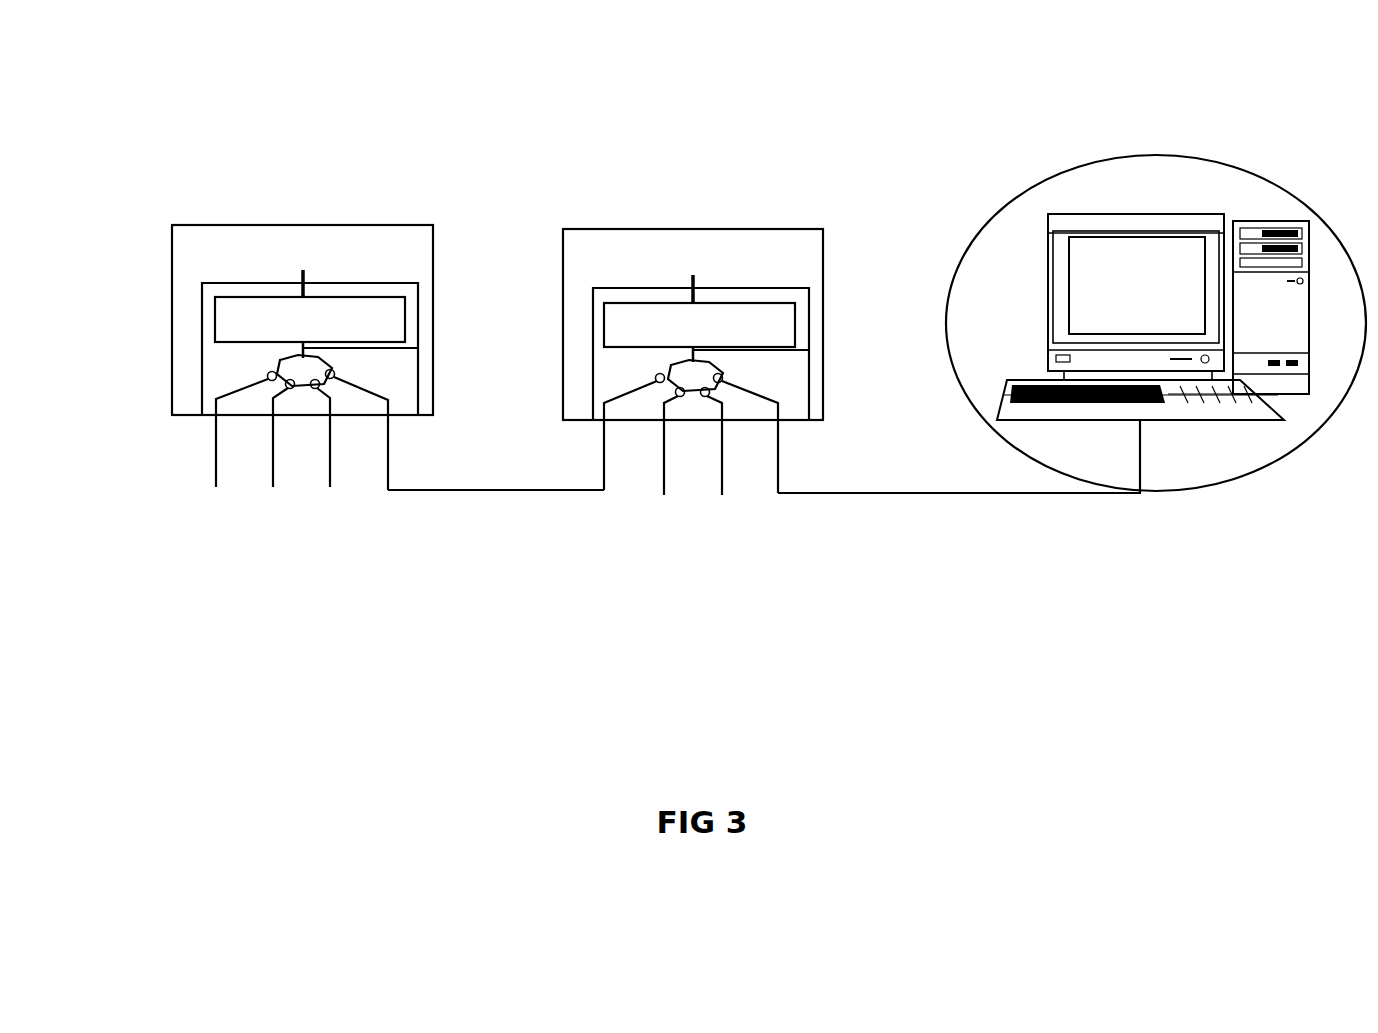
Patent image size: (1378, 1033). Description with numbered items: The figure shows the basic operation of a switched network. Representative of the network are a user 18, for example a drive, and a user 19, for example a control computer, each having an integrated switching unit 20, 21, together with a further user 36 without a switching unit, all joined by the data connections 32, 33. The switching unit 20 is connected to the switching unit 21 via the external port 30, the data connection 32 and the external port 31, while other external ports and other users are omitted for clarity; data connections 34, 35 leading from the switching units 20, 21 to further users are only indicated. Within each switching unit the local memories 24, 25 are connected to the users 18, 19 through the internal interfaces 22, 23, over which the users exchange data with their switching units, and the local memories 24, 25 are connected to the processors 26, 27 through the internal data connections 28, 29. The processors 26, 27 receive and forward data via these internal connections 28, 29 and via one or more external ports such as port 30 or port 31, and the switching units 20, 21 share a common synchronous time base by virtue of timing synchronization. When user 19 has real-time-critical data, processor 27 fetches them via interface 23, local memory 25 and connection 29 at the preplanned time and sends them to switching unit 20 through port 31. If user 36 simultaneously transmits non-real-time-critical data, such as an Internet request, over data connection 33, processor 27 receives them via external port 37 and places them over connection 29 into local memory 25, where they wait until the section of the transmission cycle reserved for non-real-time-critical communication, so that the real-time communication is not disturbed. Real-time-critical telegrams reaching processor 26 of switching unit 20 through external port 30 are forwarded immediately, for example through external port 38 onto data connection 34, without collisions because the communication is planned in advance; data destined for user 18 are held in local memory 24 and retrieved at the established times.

The user 18 is at (305, 247).
The user 19 is at (617, 262).
The switching unit 20 is at (220, 352).
The switching unit 21 is at (803, 348).
The internal interface 22 is at (300, 277).
The internal interface 23 is at (700, 278).
The local memory 24 is at (295, 368).
The local memory 25 is at (768, 320).
The processor 26 is at (233, 308).
The processor 27 is at (680, 367).
The internal data connection 28 is at (334, 372).
The internal data connection 29 is at (696, 356).
The external port 30 is at (335, 376).
The external port 31 is at (656, 378).
The data connection 32 is at (448, 492).
The data connection 33 is at (903, 498).
The data connection 34 is at (223, 477).
The data connection 35 is at (664, 477).
The user 36 is at (1223, 166).
The external port 37 is at (722, 378).
The external port 38 is at (268, 375).